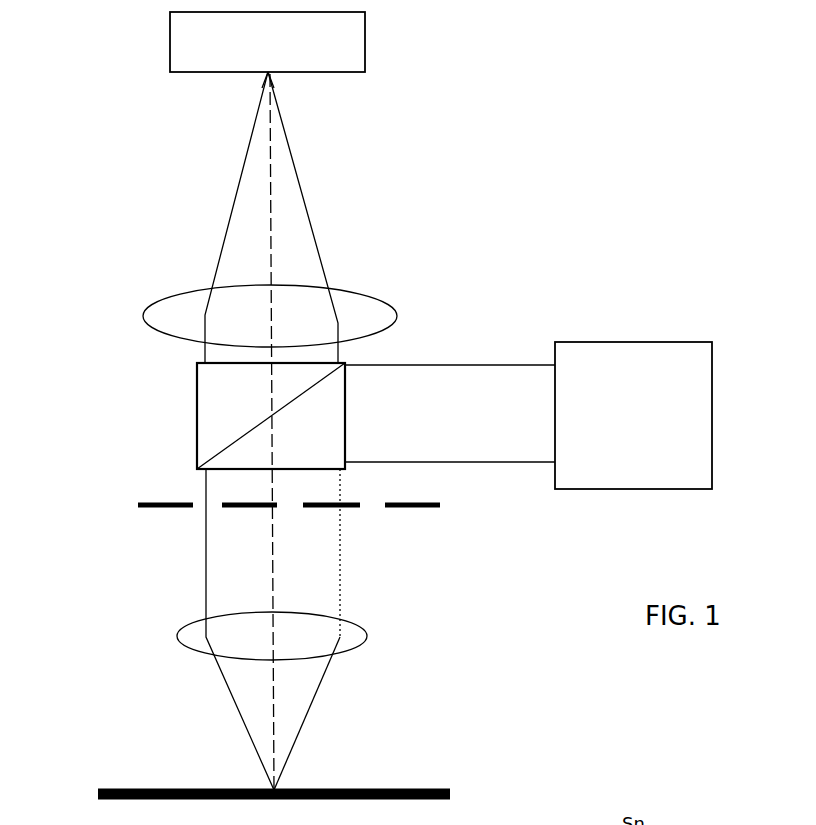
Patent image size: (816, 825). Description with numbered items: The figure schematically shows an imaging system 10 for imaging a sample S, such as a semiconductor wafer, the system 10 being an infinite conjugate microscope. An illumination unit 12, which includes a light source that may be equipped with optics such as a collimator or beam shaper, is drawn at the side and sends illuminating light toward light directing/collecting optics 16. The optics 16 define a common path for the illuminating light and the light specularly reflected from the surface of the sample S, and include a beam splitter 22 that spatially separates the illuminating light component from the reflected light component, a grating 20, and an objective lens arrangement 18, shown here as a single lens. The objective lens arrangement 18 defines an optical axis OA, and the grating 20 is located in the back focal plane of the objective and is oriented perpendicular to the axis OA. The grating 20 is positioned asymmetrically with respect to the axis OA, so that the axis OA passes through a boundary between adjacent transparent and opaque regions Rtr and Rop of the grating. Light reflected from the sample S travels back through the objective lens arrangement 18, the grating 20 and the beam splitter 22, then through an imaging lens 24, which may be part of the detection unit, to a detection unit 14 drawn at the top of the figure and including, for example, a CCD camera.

The imaging system 10 is at (437, 190).
The illumination unit 12 is at (648, 330).
The detection unit 14 is at (388, 52).
The light directing/collecting optics 16 is at (191, 411).
The objective lens arrangement 18 is at (367, 636).
The grating 20 is at (167, 508).
The beam splitter 22 is at (196, 416).
The imaging lens 24 is at (396, 316).
The optical axis OA is at (275, 729).
The sample S is at (450, 778).
The transparent regions Rtr is at (291, 507).
The opaque regions Rop is at (357, 508).